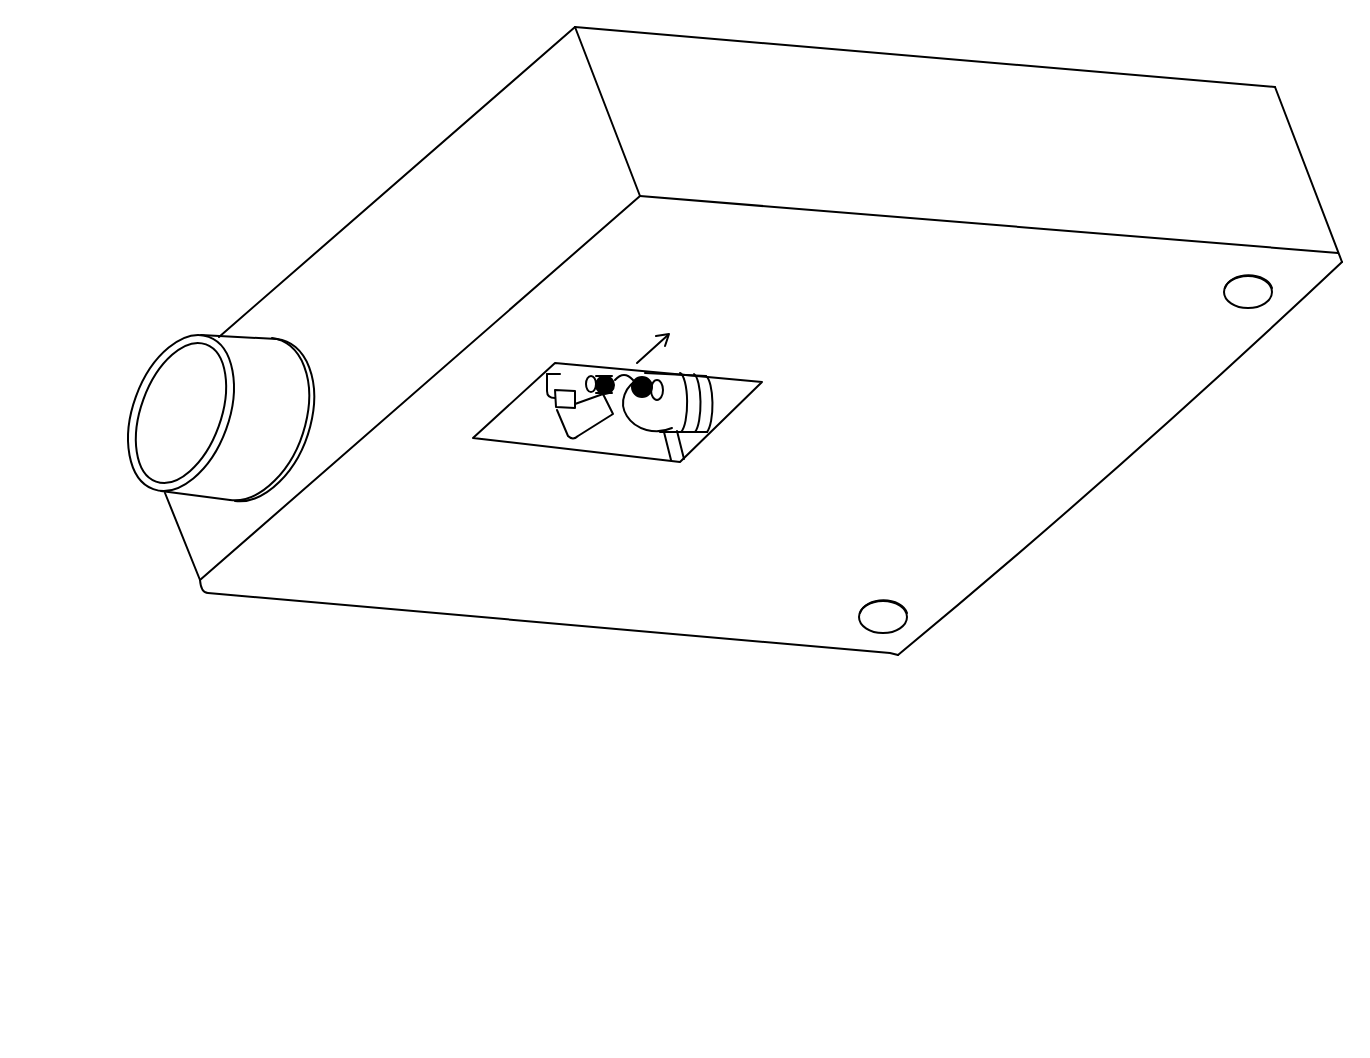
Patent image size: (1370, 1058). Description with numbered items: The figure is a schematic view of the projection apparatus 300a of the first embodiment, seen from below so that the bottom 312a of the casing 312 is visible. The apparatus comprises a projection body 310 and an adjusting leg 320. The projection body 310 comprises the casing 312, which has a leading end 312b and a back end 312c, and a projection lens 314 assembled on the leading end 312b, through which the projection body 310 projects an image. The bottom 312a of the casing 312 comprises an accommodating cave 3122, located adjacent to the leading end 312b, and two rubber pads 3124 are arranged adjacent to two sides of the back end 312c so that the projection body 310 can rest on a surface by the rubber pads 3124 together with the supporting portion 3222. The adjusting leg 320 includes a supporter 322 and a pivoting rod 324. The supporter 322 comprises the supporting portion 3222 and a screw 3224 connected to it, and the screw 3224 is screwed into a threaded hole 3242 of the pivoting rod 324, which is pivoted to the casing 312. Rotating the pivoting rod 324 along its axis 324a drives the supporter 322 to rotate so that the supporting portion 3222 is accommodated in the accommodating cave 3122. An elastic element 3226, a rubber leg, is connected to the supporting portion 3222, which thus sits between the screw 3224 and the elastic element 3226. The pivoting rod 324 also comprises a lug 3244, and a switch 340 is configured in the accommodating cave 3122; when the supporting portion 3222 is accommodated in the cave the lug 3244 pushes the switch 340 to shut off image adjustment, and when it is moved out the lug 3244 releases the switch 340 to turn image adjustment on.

The projection apparatus 300a is at (1306, 745).
The projection body 310 is at (212, 228).
The casing 312 is at (313, 278).
The bottom of the casing 312a is at (816, 612).
The leading end 312b is at (392, 229).
The back end 312c is at (1113, 471).
The accommodating cave 3122 is at (497, 452).
The rubber pads 3124 is at (1257, 294).
The projection lens 314 is at (245, 363).
The adjusting leg 320 is at (727, 792).
The supporter 322 is at (670, 740).
The supporting portion 3222 is at (657, 412).
The screw 3224 is at (637, 401).
The elastic element 3226 is at (698, 403).
The pivoting rod 324 is at (612, 402).
The axis of the pivoting rod 324a is at (647, 343).
The threaded hole 3242 is at (606, 401).
The lug 3244 is at (562, 411).
The switch 340 is at (557, 413).